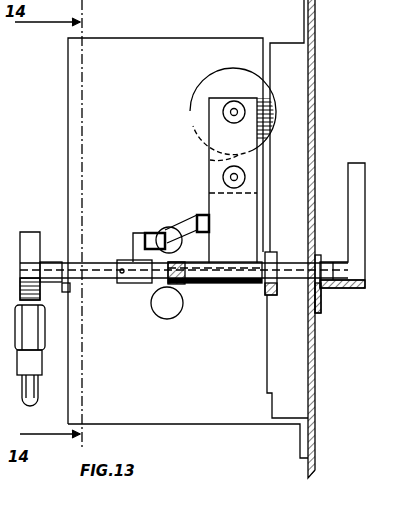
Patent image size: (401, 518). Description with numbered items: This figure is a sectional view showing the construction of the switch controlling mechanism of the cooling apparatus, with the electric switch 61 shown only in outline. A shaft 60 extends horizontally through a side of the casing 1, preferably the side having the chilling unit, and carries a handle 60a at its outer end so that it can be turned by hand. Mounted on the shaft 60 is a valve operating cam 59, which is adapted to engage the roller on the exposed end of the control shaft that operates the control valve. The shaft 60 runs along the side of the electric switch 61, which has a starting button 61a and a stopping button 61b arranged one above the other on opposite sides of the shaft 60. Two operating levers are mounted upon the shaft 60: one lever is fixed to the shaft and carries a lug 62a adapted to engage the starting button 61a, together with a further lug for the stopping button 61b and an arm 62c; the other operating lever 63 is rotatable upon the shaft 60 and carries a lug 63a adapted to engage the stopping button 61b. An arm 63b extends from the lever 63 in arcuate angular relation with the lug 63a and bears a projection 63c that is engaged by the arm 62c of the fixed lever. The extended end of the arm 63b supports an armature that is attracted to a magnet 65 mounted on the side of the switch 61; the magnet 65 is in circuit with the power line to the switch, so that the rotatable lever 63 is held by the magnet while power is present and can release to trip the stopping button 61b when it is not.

The casing 1 is at (315, 336).
The valve operating cam 59 is at (28, 235).
The shaft 60 is at (97, 262).
The handle 60a is at (375, 155).
The electric switch 61 is at (77, 165).
The starting button 61a is at (168, 228).
The stopping button 61b is at (173, 320).
The lug 62a is at (137, 285).
The arm 62c is at (197, 220).
The operating lever 63 is at (228, 283).
The lug 63a is at (187, 283).
The arm 63b is at (217, 163).
The projection 63c is at (202, 215).
The magnet 65 is at (210, 92).